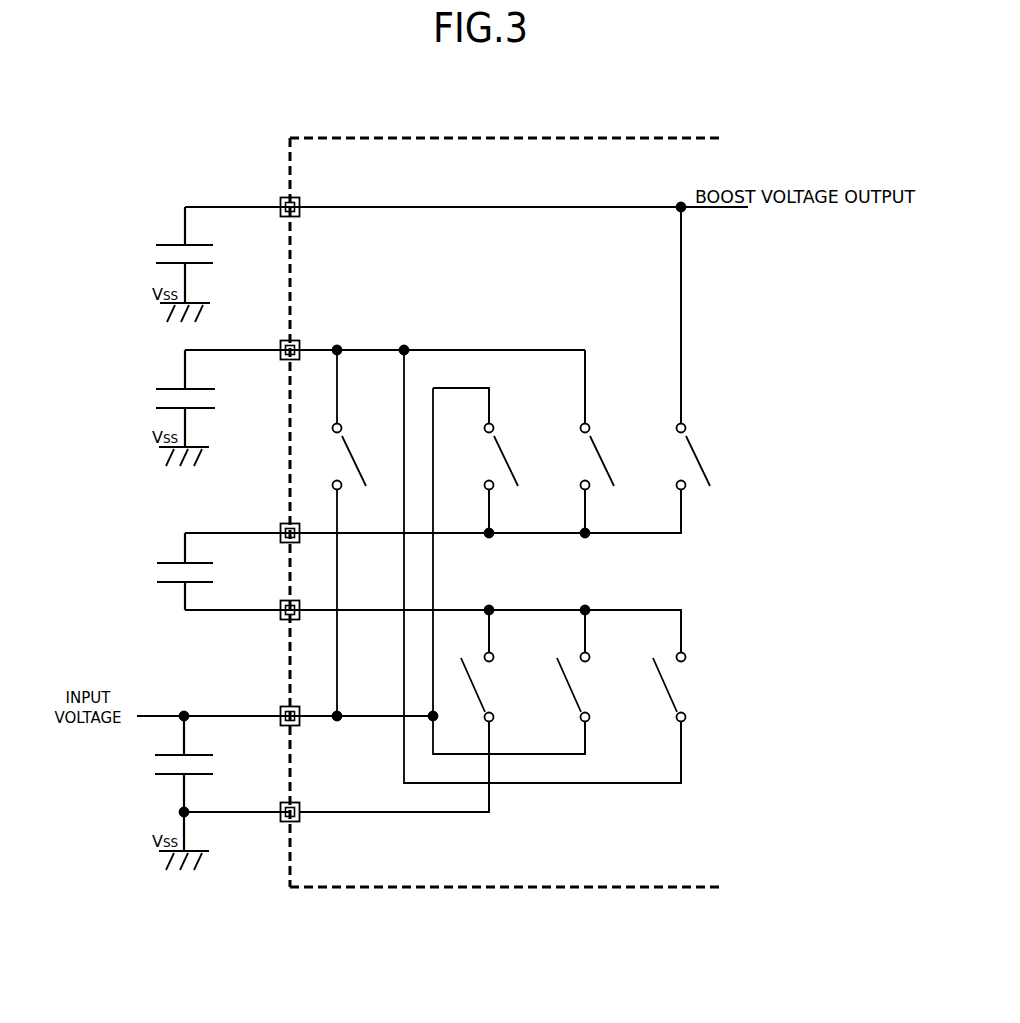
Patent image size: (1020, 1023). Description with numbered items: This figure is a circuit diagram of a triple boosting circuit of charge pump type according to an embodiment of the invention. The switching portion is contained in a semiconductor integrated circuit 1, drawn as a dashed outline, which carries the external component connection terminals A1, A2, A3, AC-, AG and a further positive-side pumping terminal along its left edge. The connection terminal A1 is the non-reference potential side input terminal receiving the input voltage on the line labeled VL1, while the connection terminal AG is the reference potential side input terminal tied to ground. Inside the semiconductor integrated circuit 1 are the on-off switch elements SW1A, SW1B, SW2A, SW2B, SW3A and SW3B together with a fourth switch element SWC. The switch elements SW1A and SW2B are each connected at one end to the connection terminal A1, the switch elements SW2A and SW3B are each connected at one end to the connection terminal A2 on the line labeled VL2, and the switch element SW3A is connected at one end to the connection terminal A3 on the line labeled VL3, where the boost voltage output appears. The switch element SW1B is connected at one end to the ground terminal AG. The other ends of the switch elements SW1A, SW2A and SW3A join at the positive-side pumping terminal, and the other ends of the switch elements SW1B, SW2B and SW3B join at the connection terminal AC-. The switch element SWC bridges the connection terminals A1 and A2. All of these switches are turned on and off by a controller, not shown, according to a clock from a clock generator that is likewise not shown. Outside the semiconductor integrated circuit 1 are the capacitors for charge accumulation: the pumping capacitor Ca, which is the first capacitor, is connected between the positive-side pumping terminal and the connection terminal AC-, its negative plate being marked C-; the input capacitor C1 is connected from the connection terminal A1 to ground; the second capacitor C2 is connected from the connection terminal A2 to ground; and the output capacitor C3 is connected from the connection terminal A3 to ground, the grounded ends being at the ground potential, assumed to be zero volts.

The semiconductor integrated circuit 1 is at (518, 138).
The connection terminal A1 is at (285, 707).
The connection terminal A2 is at (300, 340).
The connection terminal A3 is at (300, 196).
The connection terminal AC- is at (280, 618).
The connection terminal AG is at (280, 821).
The capacitor C1 is at (154, 767).
The capacitor C2 is at (154, 401).
The capacitor C3 is at (154, 258).
The pumping capacitor Ca is at (154, 574).
The switch element SWC is at (347, 447).
The switch element SW1A is at (499, 447).
The switch element SW2A is at (595, 447).
The switch element SW3A is at (691, 447).
The switch element SW1B is at (490, 687).
The switch element SW2B is at (586, 687).
The switch element SW3B is at (682, 687).
The voltage line VL1 is at (285, 705).
The voltage line VL2 is at (385, 341).
The voltage line VL3 is at (466, 196).
The capacitor negative node C- is at (433, 620).